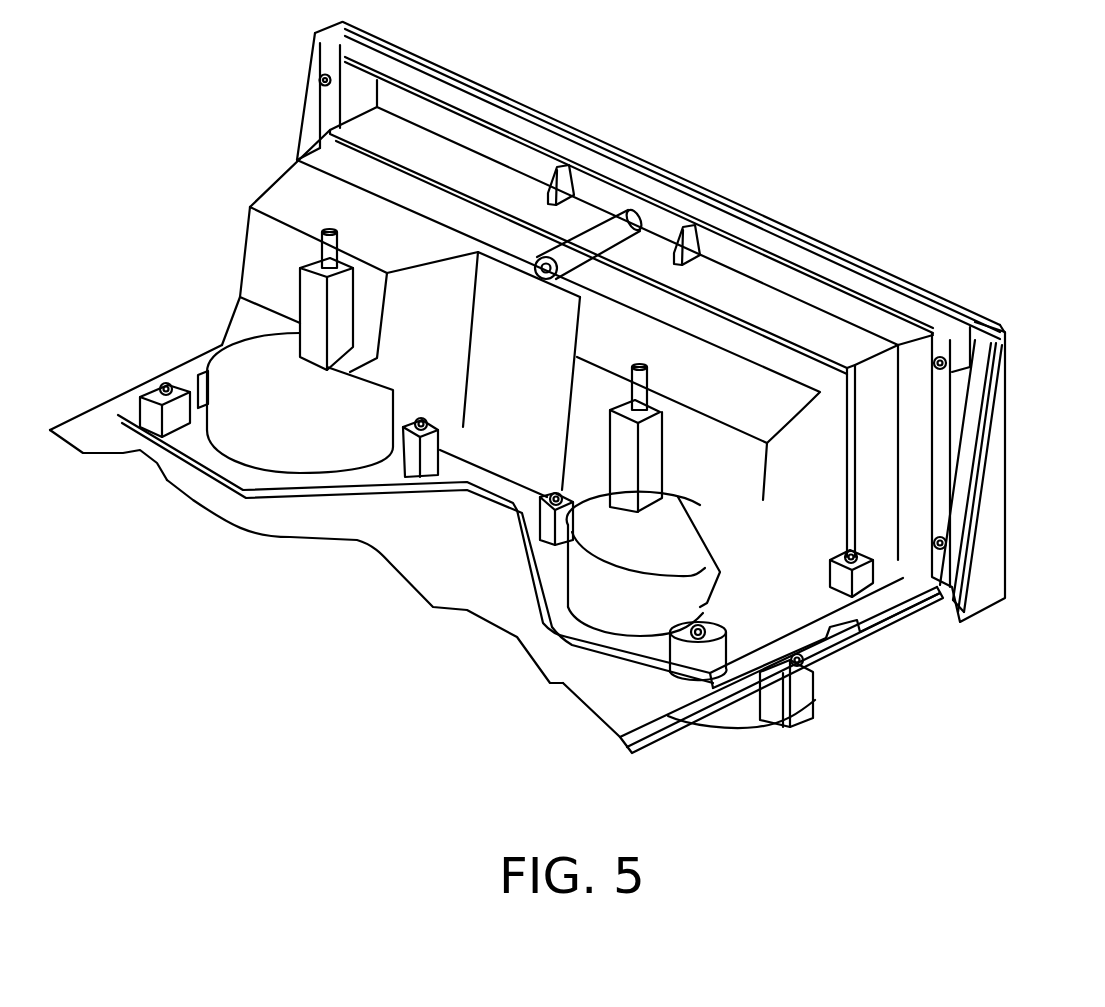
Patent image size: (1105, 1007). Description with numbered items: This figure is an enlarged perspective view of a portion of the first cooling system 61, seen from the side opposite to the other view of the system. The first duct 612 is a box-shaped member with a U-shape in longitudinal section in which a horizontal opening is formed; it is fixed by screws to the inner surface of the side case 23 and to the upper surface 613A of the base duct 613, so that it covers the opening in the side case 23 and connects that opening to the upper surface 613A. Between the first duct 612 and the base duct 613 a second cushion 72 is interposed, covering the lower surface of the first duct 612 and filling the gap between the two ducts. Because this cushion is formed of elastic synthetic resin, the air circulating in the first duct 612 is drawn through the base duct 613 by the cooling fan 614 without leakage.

The first cooling system 61 is at (736, 141).
The first duct 612 is at (800, 287).
The side case 23 is at (1000, 502).
The second cushion 72 is at (280, 497).
The base duct 613 is at (590, 688).
The upper surface of the base duct 613A is at (435, 587).
The cooling fan 614 is at (806, 700).